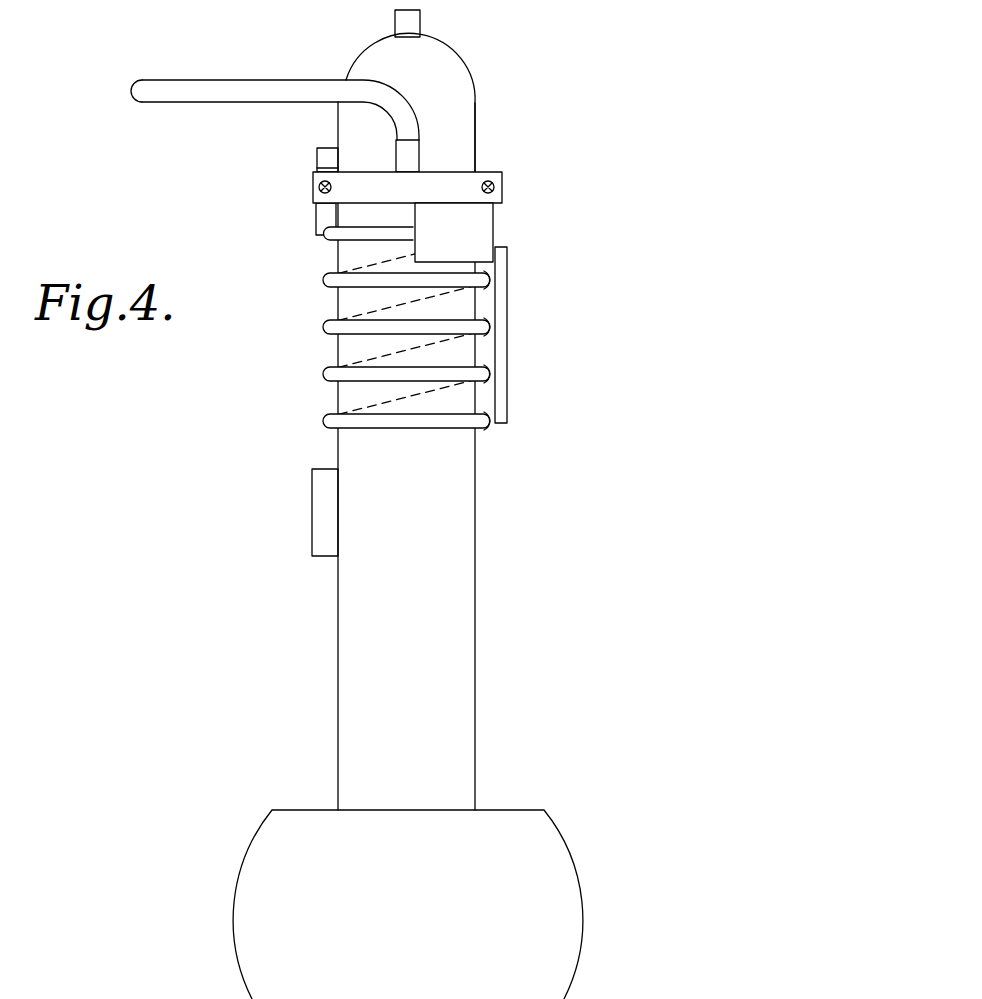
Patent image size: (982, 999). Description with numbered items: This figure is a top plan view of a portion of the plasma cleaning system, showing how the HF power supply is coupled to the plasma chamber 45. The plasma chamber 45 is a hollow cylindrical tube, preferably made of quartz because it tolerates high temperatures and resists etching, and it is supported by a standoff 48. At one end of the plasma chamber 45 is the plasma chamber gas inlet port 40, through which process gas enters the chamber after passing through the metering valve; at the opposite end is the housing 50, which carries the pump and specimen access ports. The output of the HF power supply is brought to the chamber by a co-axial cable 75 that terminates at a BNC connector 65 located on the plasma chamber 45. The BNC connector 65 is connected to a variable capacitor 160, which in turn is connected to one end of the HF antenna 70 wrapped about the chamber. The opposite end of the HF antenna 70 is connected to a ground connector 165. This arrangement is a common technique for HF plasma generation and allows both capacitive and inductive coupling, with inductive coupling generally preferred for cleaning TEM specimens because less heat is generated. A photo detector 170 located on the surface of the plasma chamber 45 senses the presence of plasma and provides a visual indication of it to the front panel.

The plasma chamber gas inlet port 40 is at (415, 22).
The plasma chamber 45 is at (458, 595).
The standoff 48 is at (505, 177).
The housing 50 is at (557, 872).
The BNC connector 65 is at (415, 153).
The HF antenna 70 is at (323, 331).
The co-axial cable 75 is at (227, 98).
The variable capacitor 160 is at (487, 230).
The ground connector 165 is at (322, 168).
The photo detector 170 is at (320, 508).